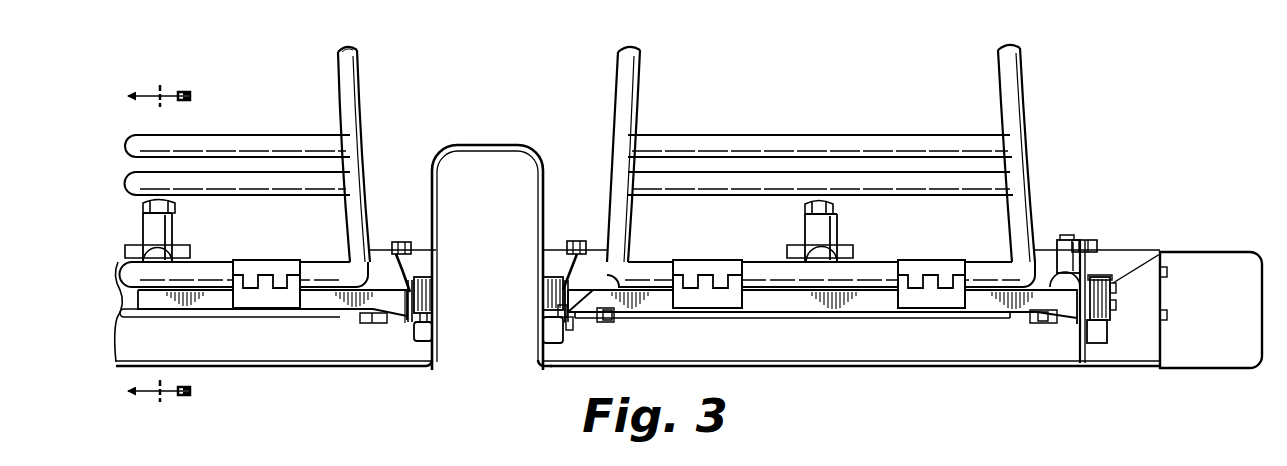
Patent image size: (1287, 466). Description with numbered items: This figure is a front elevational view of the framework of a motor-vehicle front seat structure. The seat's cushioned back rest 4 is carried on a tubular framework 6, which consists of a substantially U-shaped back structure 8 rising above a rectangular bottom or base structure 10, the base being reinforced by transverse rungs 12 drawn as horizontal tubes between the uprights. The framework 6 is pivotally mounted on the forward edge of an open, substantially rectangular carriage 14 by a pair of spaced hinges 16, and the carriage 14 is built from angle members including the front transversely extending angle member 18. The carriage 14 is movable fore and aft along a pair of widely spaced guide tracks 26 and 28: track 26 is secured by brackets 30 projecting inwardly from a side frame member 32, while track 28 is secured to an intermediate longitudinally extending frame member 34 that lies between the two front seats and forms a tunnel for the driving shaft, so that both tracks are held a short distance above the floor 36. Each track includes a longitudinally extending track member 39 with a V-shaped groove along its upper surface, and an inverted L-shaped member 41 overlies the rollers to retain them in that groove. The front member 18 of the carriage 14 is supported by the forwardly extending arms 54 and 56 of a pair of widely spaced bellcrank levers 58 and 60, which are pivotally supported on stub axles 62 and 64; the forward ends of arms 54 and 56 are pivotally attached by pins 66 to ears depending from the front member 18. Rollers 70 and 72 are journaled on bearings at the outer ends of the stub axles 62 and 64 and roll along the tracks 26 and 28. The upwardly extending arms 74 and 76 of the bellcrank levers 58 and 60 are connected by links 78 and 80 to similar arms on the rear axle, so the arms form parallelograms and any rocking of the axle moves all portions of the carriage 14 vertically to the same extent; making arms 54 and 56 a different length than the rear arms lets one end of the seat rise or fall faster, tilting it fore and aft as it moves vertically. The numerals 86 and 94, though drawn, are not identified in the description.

The cushioned back rest 4 is at (151, 246).
The framework 6 is at (1006, 93).
The U-shaped back structure 8 is at (368, 108).
The base structure 10 is at (312, 272).
The transverse rungs 12 is at (252, 185).
The carriage 14 is at (222, 296).
The hinges 16 is at (280, 298).
The front transversely extending angle member 18 is at (162, 298).
The guide track 26 is at (1109, 276).
The guide track 28 is at (419, 349).
The brackets 30 is at (1148, 336).
The side frame member 32 is at (1222, 250).
The intermediate frame member 34 is at (550, 185).
The floor 36 is at (892, 364).
The track member 39 is at (413, 332).
The inverted L-shaped member 41 is at (423, 277).
The forwardly extending arm 54 is at (570, 327).
The forwardly extending arm 56 is at (1083, 343).
The bellcrank lever 58 is at (387, 265).
The bellcrank lever 60 is at (1081, 237).
The stub axle 62 is at (545, 293).
The stub axle 64 is at (1111, 297).
The pins 66 is at (608, 323).
The roller 70 is at (560, 312).
The roller 72 is at (1113, 306).
The upwardly extending arm 74 is at (409, 254).
The upwardly extending arm 76 is at (1101, 272).
The link 78 is at (403, 242).
The link 80 is at (1084, 250).
The cylinder 86 is at (1061, 265).
The bolt 94 is at (166, 228).